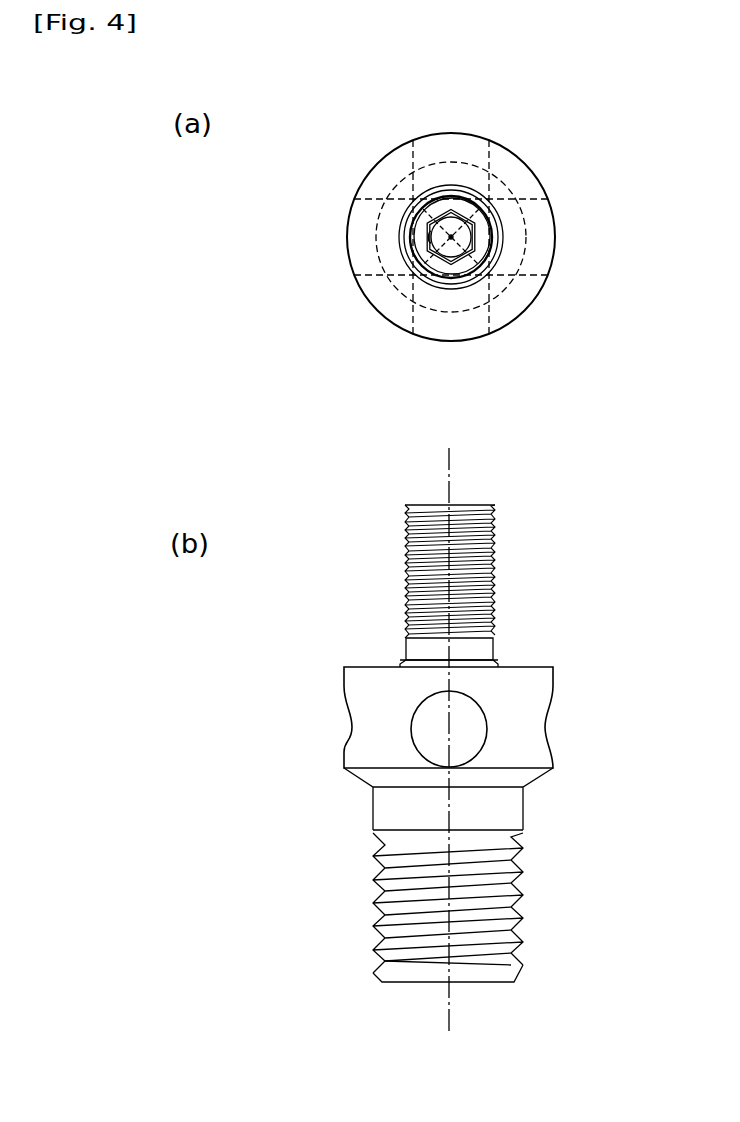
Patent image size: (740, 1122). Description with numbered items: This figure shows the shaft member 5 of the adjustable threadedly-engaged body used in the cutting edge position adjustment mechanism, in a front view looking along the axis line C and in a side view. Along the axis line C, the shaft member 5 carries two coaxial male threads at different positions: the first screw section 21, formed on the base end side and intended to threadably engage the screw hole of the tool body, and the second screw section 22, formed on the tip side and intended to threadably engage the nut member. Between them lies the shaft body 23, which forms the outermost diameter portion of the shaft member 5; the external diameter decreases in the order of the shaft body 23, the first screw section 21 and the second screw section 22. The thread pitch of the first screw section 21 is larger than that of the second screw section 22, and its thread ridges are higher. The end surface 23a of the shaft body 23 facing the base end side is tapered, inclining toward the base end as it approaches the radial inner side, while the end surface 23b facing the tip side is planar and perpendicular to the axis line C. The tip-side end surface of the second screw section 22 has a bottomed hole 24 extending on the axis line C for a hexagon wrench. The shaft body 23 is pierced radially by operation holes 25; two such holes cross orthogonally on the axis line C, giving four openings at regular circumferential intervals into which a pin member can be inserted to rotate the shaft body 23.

The shaft member 5 is at (599, 135).
The first screw section 21 is at (398, 292).
The second screw section 22 is at (503, 232).
The shaft body 23 is at (501, 331).
The end surface of shaft body facing base end side 23a is at (537, 782).
The end surface of shaft body facing tip side 23b is at (523, 298).
The hole 24 is at (428, 240).
The operation hole 25 is at (418, 150).
The axis line C is at (453, 235).